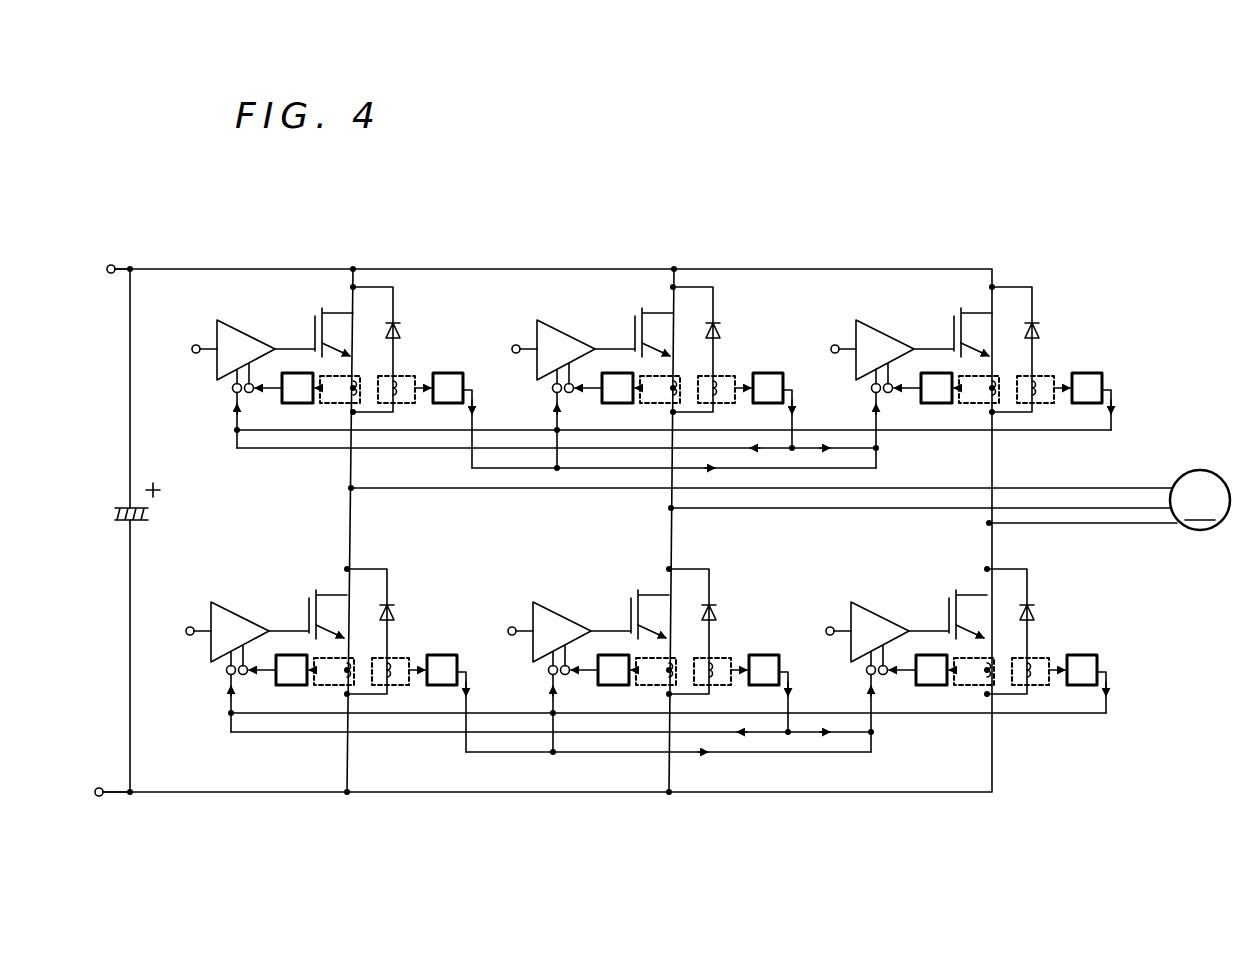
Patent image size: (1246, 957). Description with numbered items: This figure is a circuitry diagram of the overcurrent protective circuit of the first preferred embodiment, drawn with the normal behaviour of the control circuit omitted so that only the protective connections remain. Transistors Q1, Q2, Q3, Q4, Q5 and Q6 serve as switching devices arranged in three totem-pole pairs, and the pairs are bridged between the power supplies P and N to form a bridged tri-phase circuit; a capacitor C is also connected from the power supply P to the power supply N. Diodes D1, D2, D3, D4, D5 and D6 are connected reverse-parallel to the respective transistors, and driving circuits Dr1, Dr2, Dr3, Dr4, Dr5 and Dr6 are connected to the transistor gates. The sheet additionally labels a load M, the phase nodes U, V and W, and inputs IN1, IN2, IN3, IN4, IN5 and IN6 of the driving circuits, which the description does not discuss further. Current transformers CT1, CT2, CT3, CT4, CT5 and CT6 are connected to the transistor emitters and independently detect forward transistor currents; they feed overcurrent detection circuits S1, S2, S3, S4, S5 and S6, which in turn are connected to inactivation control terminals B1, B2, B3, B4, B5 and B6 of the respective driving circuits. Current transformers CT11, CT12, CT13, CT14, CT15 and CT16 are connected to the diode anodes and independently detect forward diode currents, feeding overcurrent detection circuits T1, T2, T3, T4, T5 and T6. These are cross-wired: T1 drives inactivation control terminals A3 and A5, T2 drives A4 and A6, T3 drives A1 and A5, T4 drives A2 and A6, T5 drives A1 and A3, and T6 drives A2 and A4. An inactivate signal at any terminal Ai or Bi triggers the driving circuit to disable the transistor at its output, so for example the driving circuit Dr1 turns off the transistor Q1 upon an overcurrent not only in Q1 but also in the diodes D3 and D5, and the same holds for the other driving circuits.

The power supply P is at (105, 270).
The power supply N is at (99, 794).
The capacitor C is at (118, 522).
The motor M is at (1200, 500).
The U-phase output terminal U is at (759, 502).
The V-phase output terminal V is at (919, 520).
The W-phase output terminal W is at (1081, 538).
The input terminal 1 IN1 is at (180, 350).
The input terminal 2 IN2 is at (177, 631).
The input terminal 3 IN3 is at (503, 350).
The input terminal 4 IN4 is at (496, 631).
The input terminal 5 IN5 is at (824, 350).
The input terminal 6 IN6 is at (817, 631).
The driving circuit Dr1 is at (246, 352).
The driving circuit Dr2 is at (240, 634).
The driving circuit Dr3 is at (566, 352).
The driving circuit Dr4 is at (562, 634).
The driving circuit Dr5 is at (885, 352).
The driving circuit Dr6 is at (880, 634).
The transistor Q1 is at (309, 326).
The transistor Q2 is at (310, 592).
The transistor Q3 is at (634, 332).
The transistor Q4 is at (623, 594).
The transistor Q5 is at (948, 325).
The transistor Q6 is at (947, 600).
The diode D1 is at (402, 328).
The diode D2 is at (394, 603).
The diode D3 is at (720, 322).
The diode D4 is at (722, 592).
The diode D5 is at (1036, 326).
The diode D6 is at (1038, 607).
The overcurrent detection circuit S1 is at (290, 373).
The overcurrent detection circuit S2 is at (283, 687).
The overcurrent detection circuit S3 is at (618, 373).
The overcurrent detection circuit S4 is at (603, 687).
The overcurrent detection circuit S5 is at (938, 374).
The overcurrent detection circuit S6 is at (925, 687).
The overcurrent detection circuit T1 is at (447, 373).
The overcurrent detection circuit T2 is at (440, 687).
The overcurrent detection circuit T3 is at (768, 405).
The overcurrent detection circuit T4 is at (762, 687).
The overcurrent detection circuit T5 is at (1088, 373).
The overcurrent detection circuit T6 is at (1086, 657).
The inactivation control terminal A1 is at (233, 390).
The inactivation control terminal A2 is at (227, 672).
The inactivation control terminal A3 is at (553, 393).
The inactivation control terminal A4 is at (548, 672).
The inactivation control terminal A5 is at (854, 426).
The inactivation control terminal A6 is at (866, 672).
The inactivation control terminal B1 is at (250, 393).
The inactivation control terminal B2 is at (245, 666).
The inactivation control terminal B3 is at (572, 391).
The inactivation control terminal B4 is at (568, 666).
The inactivation control terminal B5 is at (891, 390).
The inactivation control terminal B6 is at (886, 666).
The current transformer CT1 is at (334, 404).
The current transformer CT2 is at (323, 687).
The current transformer CT3 is at (655, 405).
The current transformer CT4 is at (650, 687).
The current transformer CT5 is at (977, 404).
The current transformer CT6 is at (972, 687).
The current transformer CT11 is at (401, 405).
The current transformer CT12 is at (396, 687).
The current transformer CT13 is at (726, 374).
The current transformer CT14 is at (727, 658).
The current transformer CT15 is at (1045, 405).
The current transformer CT16 is at (1038, 687).